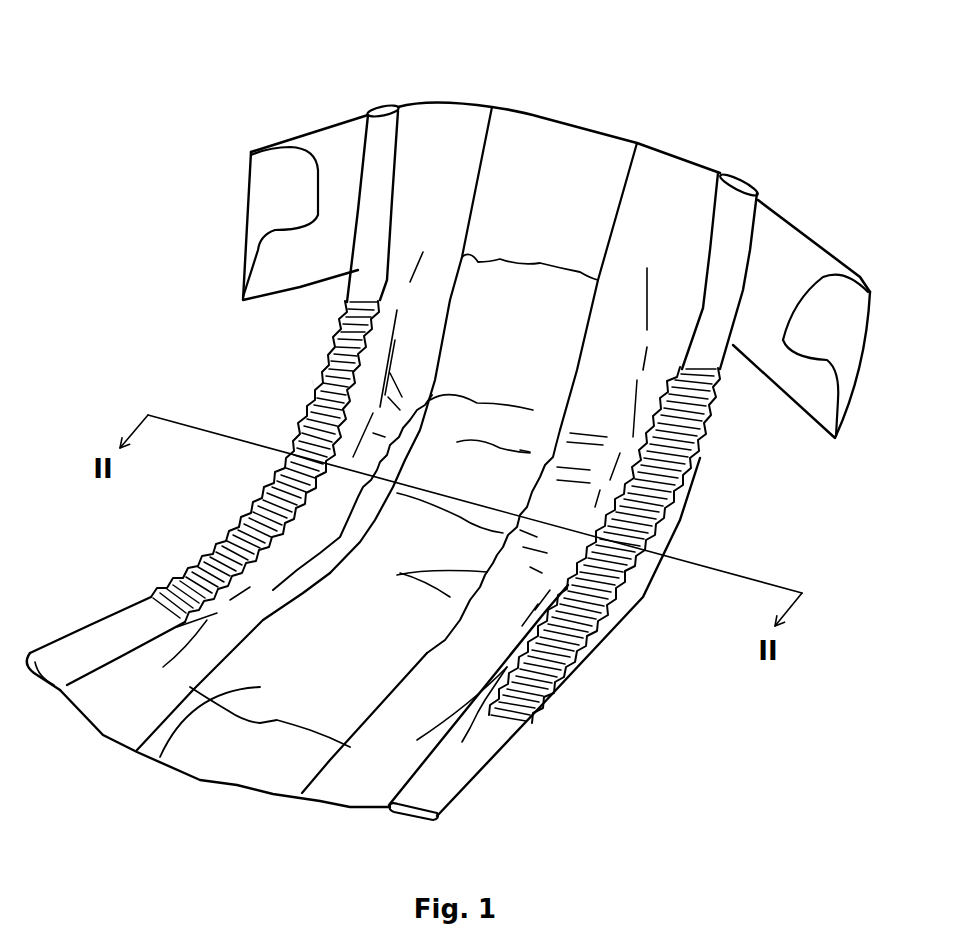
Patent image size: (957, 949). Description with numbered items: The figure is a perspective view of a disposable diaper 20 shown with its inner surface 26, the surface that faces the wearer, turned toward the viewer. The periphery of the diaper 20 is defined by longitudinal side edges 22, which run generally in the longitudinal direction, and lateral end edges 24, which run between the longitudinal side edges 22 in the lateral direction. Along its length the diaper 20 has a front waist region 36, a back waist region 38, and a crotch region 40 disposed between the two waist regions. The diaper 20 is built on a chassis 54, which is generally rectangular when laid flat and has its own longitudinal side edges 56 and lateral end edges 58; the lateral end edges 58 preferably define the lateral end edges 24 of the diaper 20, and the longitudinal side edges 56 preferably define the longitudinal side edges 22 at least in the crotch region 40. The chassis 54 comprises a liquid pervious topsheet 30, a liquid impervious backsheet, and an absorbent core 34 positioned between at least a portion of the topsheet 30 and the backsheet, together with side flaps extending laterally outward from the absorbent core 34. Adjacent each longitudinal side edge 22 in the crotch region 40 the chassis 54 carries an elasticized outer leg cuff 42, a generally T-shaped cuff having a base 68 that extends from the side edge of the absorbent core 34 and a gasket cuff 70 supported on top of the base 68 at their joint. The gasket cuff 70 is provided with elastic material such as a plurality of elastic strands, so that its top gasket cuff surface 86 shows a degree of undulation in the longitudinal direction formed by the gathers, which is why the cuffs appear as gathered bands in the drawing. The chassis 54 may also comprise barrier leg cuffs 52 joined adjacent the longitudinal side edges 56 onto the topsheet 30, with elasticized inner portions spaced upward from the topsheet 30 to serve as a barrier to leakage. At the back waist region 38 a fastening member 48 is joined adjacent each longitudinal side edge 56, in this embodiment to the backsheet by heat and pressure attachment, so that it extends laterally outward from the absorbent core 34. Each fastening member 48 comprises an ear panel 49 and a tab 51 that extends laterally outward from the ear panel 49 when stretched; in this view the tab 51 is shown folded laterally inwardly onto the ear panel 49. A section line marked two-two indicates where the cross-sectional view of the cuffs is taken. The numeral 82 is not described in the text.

The diaper 20 is at (628, 90).
The longitudinal side edges 22 is at (277, 477).
The lateral end edges 24 is at (676, 152).
The inner surface 26 is at (523, 165).
The topsheet 30 is at (160, 757).
The absorbent core 34 is at (333, 690).
The front waist region 36 is at (479, 785).
The back waist region 38 is at (430, 85).
The crotch region 40 is at (639, 634).
The elasticized outer leg cuff 42 is at (308, 380).
The fastening member 48 is at (293, 133).
The ear panel 49 is at (330, 140).
The tab 51 is at (280, 186).
The barrier leg cuff 52 is at (340, 560).
The chassis 54 is at (93, 601).
The longitudinal side edges of the chassis 56 is at (297, 423).
The lateral end edges of the chassis 58 is at (558, 115).
The base 68 is at (366, 381).
The gasket cuff 70 is at (227, 550).
The gasket cuff edge 82 is at (283, 535).
The top gasket cuff surface 86 is at (330, 353).